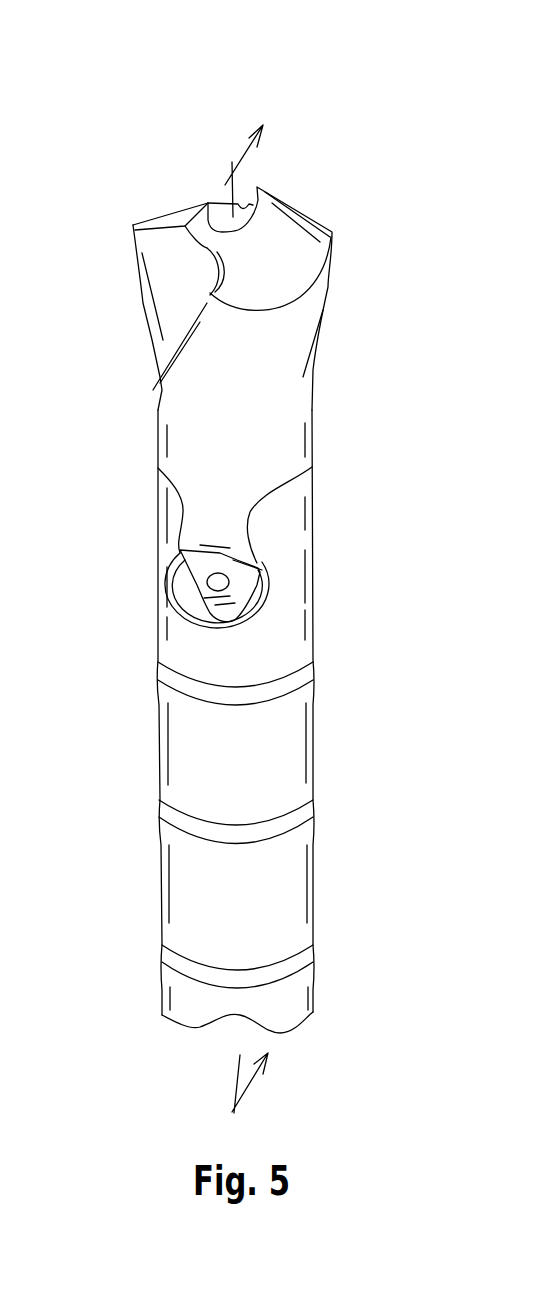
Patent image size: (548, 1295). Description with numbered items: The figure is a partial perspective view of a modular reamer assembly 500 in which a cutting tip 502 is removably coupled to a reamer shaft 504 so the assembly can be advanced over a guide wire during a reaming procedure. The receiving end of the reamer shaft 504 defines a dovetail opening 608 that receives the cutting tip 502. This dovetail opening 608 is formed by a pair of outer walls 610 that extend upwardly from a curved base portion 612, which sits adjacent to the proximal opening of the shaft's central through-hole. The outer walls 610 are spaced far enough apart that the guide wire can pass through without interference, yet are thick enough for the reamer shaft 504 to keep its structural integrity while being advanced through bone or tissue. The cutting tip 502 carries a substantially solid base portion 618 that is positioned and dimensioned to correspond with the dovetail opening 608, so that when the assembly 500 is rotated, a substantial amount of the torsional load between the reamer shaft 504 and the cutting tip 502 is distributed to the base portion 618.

The reamer assembly 500 is at (118, 156).
The cutting tip 502 is at (292, 240).
The reamer shaft 504 is at (290, 878).
The dovetail opening 608 is at (220, 597).
The outer walls 610 is at (158, 510).
The curved base portion 612 is at (290, 617).
The base portion 618 is at (212, 525).